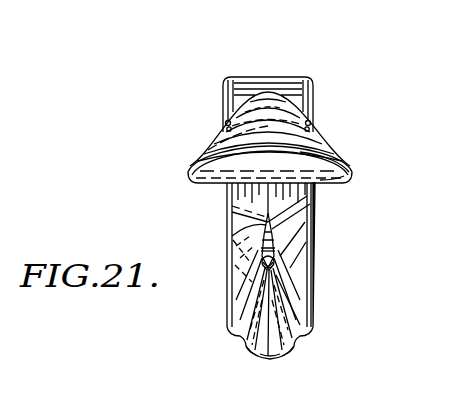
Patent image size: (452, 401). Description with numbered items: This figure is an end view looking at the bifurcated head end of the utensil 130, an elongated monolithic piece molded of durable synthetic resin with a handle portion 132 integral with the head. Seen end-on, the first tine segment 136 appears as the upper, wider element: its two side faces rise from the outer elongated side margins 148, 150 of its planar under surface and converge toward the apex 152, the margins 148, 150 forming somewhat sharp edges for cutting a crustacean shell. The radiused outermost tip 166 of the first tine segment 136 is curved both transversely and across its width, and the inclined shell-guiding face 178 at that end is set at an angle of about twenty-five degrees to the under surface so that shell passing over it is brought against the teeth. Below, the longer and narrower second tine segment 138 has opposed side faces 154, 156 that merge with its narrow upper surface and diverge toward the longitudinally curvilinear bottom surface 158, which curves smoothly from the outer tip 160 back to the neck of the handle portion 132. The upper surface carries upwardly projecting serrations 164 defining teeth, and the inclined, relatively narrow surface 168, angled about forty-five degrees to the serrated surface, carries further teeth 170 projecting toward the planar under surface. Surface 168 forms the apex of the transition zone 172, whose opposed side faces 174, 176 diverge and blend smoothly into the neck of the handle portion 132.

The utensil 130 is at (200, 108).
The handle portion 132 is at (292, 74).
The first tine segment 136 is at (334, 141).
The second tine segment 138 is at (234, 337).
The outer elongated side margin 148 is at (196, 176).
The outer elongated side margin 150 is at (350, 170).
The apex 152 is at (268, 92).
The side face 154 is at (244, 302).
The side face 156 is at (314, 300).
The bottom surface 158 is at (267, 350).
The outer tip 160 is at (283, 263).
The serrations 164 is at (275, 250).
The outermost tip 166 is at (217, 146).
The inclined narrow surface 168 is at (272, 223).
The teeth 170 is at (264, 222).
The transition zone 172 is at (224, 196).
The side face 174 is at (310, 201).
The side face 176 is at (230, 212).
The shell-guiding face 178 is at (338, 183).